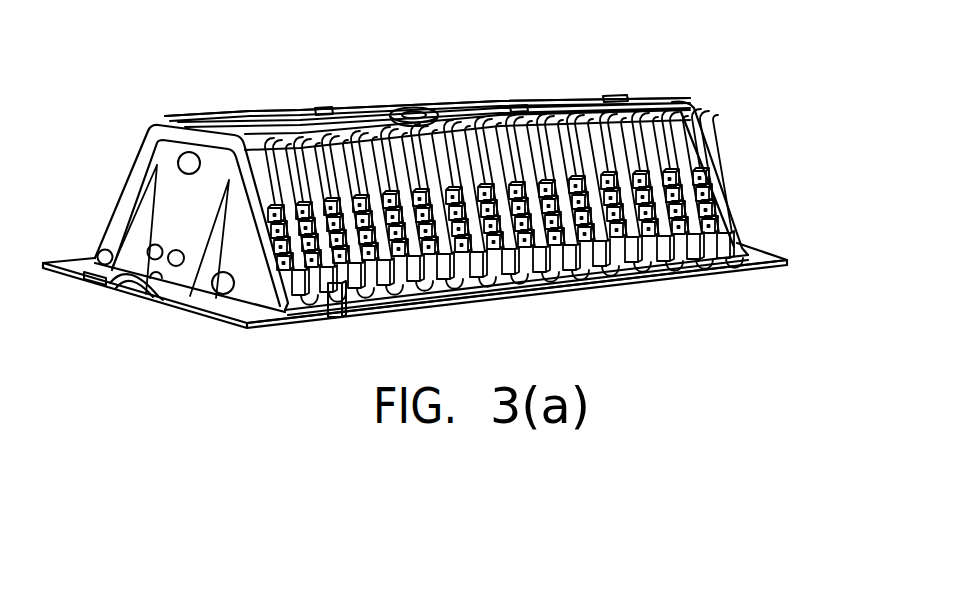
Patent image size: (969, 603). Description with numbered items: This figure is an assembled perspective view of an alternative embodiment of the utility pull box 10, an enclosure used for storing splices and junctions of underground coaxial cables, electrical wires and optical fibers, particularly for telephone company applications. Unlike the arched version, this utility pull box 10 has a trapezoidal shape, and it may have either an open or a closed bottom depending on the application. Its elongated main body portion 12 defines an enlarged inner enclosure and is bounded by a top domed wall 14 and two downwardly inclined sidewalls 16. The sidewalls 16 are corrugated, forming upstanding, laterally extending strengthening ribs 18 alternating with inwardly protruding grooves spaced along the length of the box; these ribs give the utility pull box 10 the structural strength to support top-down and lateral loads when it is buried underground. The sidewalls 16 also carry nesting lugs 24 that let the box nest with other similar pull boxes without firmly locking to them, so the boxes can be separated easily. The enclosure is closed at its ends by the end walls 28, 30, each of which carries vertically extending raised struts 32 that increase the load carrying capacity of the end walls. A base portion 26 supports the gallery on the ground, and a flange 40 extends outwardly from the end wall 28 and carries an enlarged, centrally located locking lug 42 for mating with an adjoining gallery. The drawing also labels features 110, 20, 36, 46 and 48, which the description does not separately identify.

The utility pull box 10 is at (772, 5).
The top rails 110 is at (331, 51).
The top domed wall 14 is at (405, 51).
The elongated main body portion 12 is at (482, 147).
The end wall 30 is at (769, 146).
The aperture 36 is at (160, 158).
The sidewalls 16 is at (125, 180).
The mounting holes 48 is at (157, 247).
The end wall 28 is at (192, 186).
The raised ribs or struts 32 is at (95, 286).
The arcuate guide 46 is at (128, 290).
The locking lug 42 is at (157, 293).
The flange 40 is at (245, 328).
The nesting lugs 24 is at (333, 308).
The strengthening ribs 18 is at (507, 278).
The base portion 26 is at (623, 282).
The fin tabs 20 is at (641, 250).